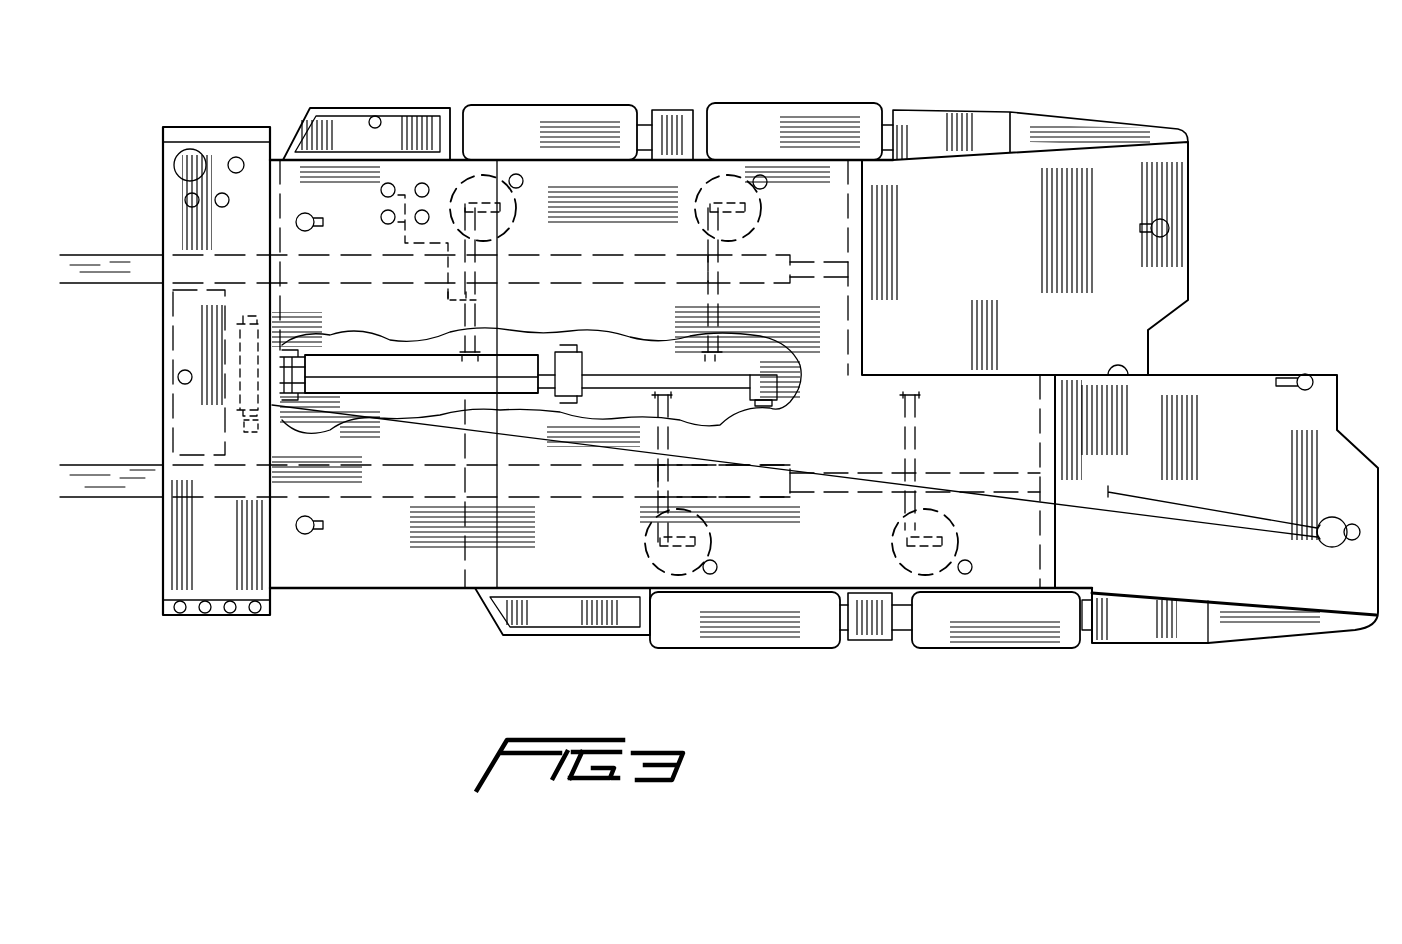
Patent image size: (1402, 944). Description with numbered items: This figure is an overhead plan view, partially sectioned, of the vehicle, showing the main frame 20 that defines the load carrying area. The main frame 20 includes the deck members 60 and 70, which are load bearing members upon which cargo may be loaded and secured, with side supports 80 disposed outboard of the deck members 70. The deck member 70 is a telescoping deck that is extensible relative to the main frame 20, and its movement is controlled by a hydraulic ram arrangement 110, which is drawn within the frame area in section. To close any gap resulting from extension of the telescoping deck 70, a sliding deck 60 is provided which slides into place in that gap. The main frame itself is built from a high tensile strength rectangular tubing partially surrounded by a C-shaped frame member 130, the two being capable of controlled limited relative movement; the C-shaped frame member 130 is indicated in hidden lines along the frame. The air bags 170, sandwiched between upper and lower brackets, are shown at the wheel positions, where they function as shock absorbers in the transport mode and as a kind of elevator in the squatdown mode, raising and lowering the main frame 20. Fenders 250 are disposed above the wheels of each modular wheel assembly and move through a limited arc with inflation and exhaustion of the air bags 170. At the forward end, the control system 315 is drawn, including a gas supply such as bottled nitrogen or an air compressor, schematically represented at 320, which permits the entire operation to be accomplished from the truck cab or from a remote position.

The main frame 20 is at (122, 262).
The sliding deck 60 is at (398, 555).
The telescoping deck 70 is at (1160, 293).
The side supports 80 is at (608, 158).
The hydraulic ram arrangement 110 is at (470, 394).
The C-shaped frame member 130 is at (835, 283).
The air bag 170 is at (692, 212).
The fenders 250 is at (558, 108).
The control system 315 is at (148, 150).
The gas supply or air compressor 320 is at (187, 149).